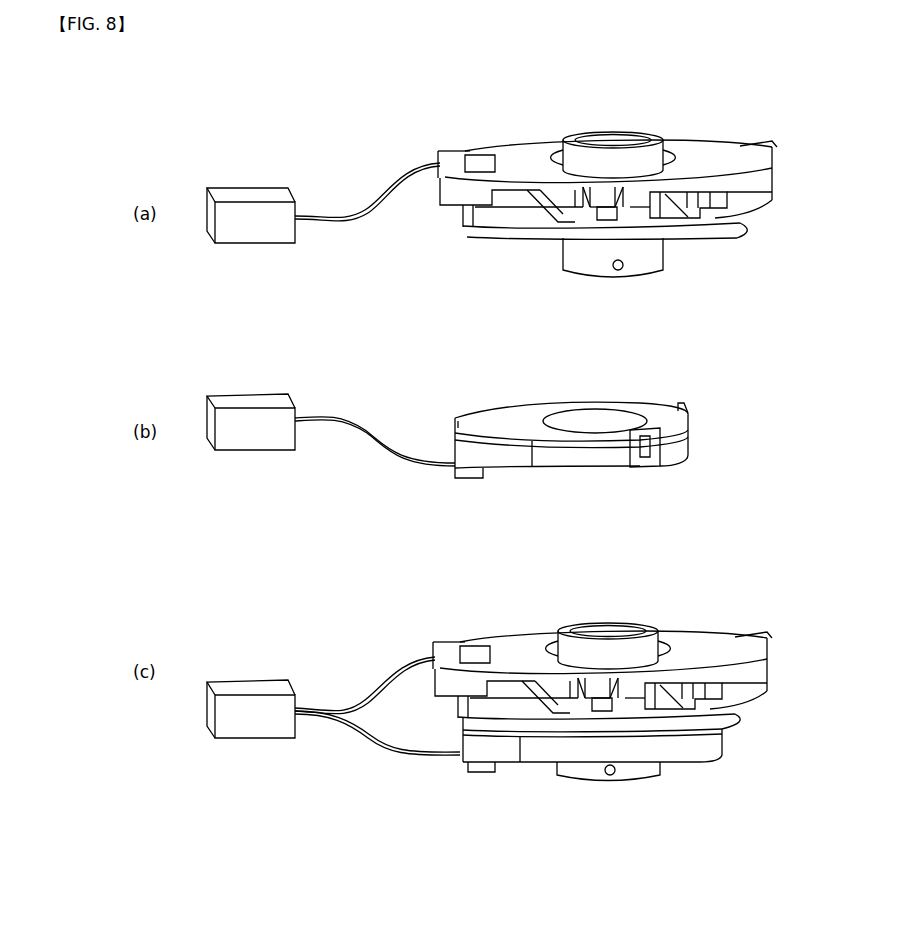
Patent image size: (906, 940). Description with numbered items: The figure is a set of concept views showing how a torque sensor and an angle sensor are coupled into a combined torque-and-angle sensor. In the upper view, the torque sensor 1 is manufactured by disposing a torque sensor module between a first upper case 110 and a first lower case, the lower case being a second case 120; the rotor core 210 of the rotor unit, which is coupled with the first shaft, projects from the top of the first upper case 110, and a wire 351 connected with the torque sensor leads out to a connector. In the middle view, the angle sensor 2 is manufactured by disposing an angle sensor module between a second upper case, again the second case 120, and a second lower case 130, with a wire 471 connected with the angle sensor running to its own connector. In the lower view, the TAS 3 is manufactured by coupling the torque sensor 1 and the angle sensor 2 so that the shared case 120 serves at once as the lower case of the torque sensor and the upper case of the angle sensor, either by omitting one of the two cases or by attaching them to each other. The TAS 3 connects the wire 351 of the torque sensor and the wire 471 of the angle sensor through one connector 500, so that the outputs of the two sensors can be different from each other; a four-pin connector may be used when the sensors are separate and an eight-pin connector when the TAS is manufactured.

The torque sensor 1 is at (467, 88).
The angle sensor 2 is at (483, 378).
The TAS 3 is at (466, 596).
The first upper case 110 is at (700, 147).
The second case 120 is at (665, 230).
The second lower case 130 is at (685, 444).
The rotor core 210 is at (565, 628).
The wire 351 is at (370, 195).
The wire 471 is at (410, 462).
The connector 500 is at (237, 740).